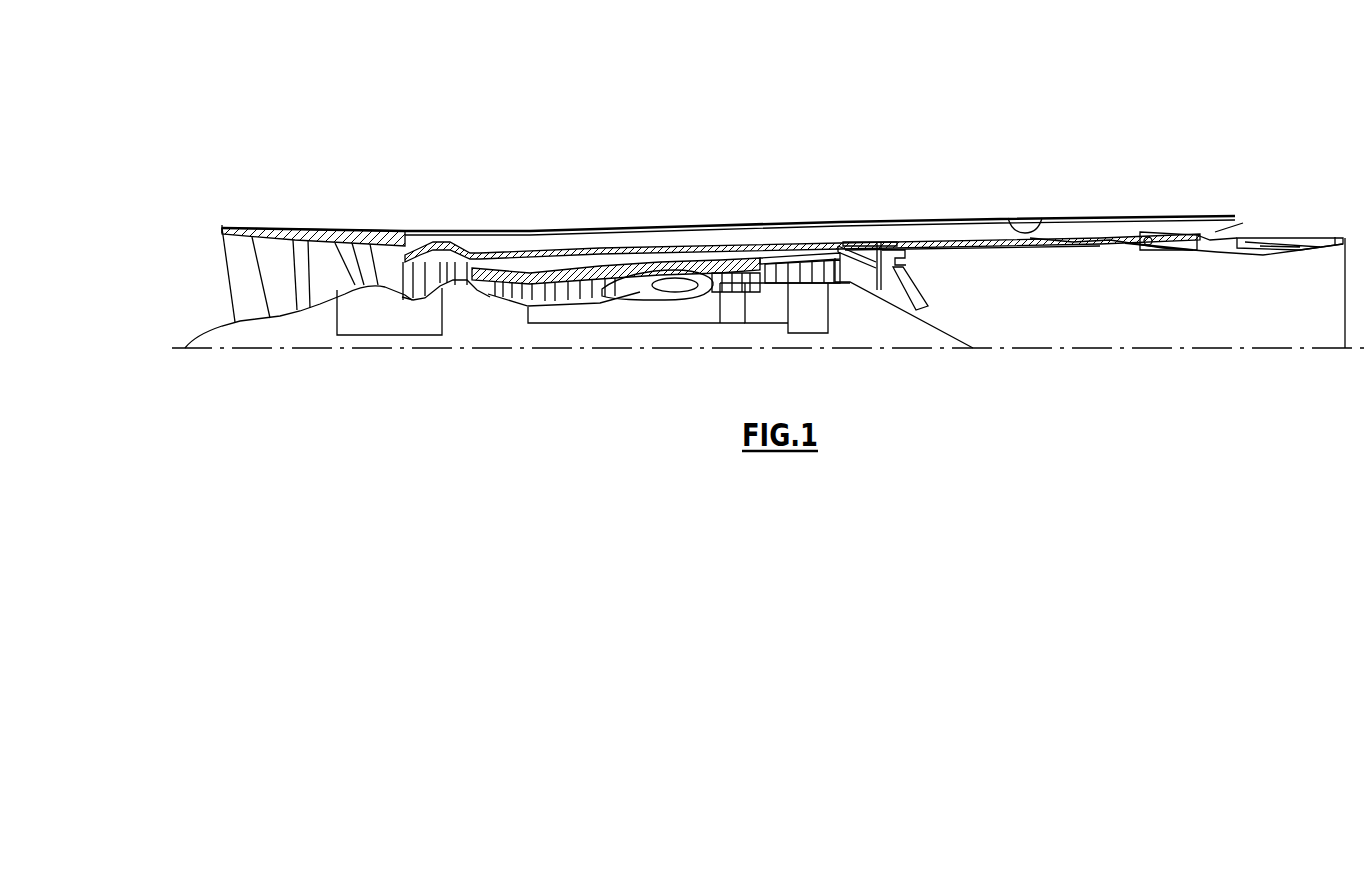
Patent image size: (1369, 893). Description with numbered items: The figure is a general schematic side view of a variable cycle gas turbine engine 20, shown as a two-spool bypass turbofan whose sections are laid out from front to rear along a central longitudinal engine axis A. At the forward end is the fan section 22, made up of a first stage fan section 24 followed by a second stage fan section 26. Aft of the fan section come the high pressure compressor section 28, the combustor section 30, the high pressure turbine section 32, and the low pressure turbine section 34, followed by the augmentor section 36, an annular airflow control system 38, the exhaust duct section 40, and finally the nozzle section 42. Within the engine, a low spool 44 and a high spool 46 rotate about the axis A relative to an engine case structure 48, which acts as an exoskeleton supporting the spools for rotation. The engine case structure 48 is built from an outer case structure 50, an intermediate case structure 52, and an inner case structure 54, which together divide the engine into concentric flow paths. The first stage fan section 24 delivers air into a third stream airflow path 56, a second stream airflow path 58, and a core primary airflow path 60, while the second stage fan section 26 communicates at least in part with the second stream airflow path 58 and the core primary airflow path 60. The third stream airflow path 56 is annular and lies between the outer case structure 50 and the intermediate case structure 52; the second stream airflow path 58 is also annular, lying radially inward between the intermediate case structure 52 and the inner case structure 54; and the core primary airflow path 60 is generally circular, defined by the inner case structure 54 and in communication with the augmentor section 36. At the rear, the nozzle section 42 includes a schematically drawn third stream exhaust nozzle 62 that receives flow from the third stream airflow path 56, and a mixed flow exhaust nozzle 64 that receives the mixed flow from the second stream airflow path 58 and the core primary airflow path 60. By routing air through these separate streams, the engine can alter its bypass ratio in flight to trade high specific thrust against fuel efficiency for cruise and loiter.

The gas turbine engine 20 is at (742, 73).
The fan section 22 is at (508, 129).
The first stage fan section 24 is at (397, 176).
The second stage fan section 26 is at (508, 176).
The high pressure compressor section 28 is at (630, 176).
The combustor section 30 is at (712, 176).
The high pressure turbine section 32 is at (762, 176).
The low pressure turbine section 34 is at (850, 176).
The augmentor section 36 is at (940, 176).
The annular airflow control system 38 is at (1025, 227).
The exhaust duct section 40 is at (1148, 176).
The nozzle section 42 is at (1345, 176).
The low spool 44 is at (755, 326).
The high spool 46 is at (573, 314).
The engine case structure 48 is at (568, 212).
The outer case structure 50 is at (517, 230).
The intermediate case structure 52 is at (523, 253).
The inner case structure 54 is at (592, 267).
The third stream airflow path 56 is at (645, 237).
The second stream airflow path 58 is at (710, 257).
The core primary airflow path 60 is at (490, 287).
The third stream exhaust nozzle 62 is at (1265, 217).
The mixed flow exhaust nozzle 64 is at (1284, 266).
The central longitudinal engine axis A is at (890, 351).